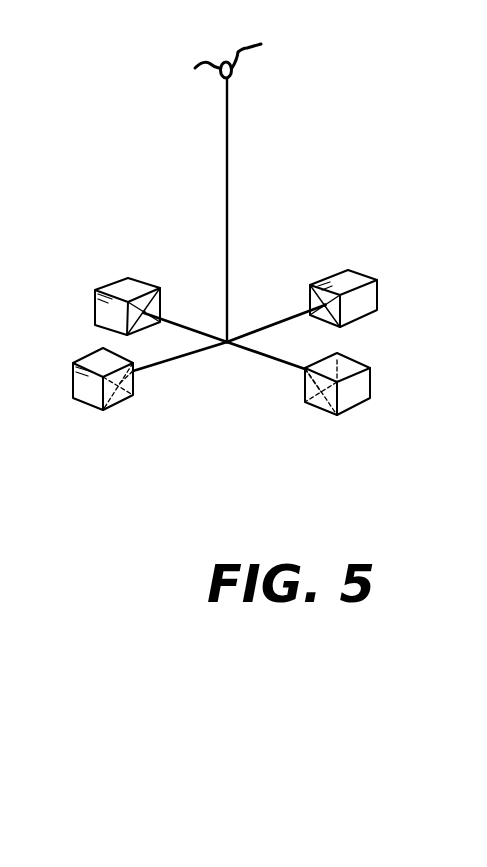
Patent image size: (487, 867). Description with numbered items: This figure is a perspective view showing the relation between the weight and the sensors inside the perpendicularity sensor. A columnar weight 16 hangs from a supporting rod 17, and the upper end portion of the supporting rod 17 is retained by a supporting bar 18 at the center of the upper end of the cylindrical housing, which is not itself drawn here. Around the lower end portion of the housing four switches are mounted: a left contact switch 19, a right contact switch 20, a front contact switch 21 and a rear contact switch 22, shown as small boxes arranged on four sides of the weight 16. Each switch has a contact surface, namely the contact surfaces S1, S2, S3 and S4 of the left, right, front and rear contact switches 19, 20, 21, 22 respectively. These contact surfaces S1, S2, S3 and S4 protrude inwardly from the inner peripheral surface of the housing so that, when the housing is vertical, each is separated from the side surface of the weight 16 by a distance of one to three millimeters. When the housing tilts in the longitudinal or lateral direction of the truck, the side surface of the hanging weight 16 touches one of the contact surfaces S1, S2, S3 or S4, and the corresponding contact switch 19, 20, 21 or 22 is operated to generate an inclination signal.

The columnar weight 16 is at (193, 353).
The supporting rod 17 is at (228, 163).
The supporting bar 18 is at (250, 47).
The left contact switch 19 is at (92, 395).
The right contact switch 20 is at (370, 300).
The front contact switch 21 is at (122, 283).
The rear contact switch 22 is at (362, 393).
The contact surface S1 is at (133, 390).
The contact surface S2 is at (310, 297).
The contact surface S3 is at (163, 295).
The contact surface S4 is at (310, 405).